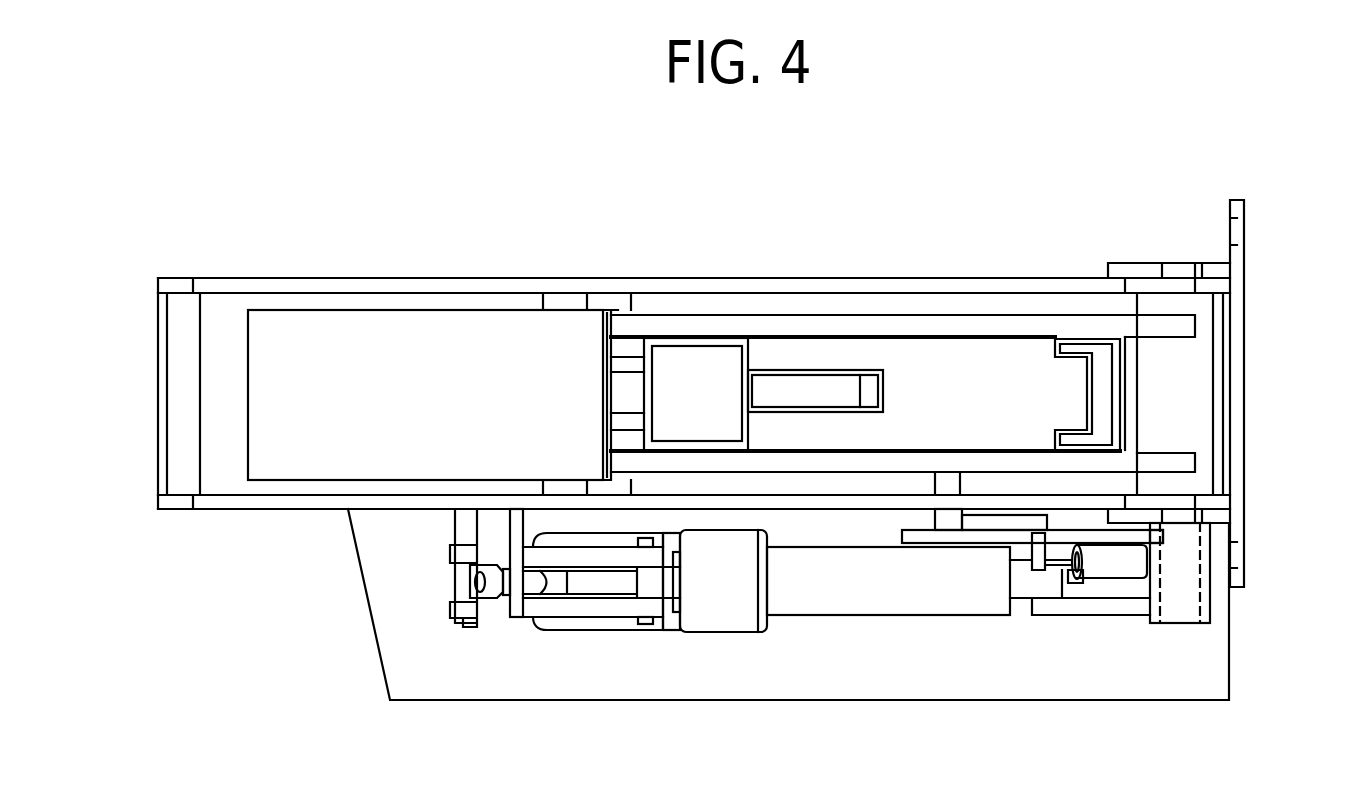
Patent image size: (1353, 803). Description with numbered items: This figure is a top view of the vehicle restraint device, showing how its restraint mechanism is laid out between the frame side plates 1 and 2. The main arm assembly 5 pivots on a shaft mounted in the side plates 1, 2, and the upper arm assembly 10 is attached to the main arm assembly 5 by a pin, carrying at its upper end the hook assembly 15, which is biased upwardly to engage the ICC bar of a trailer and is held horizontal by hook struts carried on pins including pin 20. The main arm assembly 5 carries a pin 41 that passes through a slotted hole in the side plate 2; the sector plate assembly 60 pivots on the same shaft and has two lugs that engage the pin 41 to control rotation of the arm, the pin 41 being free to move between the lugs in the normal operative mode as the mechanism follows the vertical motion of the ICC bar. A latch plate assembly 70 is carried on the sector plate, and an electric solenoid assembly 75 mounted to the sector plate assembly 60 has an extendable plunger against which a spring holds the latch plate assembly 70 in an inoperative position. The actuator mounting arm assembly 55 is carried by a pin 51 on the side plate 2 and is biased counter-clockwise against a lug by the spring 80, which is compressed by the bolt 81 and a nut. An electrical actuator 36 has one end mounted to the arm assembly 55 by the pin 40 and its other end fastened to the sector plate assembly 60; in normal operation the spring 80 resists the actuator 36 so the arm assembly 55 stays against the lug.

The frame side plate 1 is at (255, 283).
The frame side plate 2 is at (255, 502).
The main arm assembly 5 is at (807, 317).
The upper arm assembly 10 is at (417, 312).
The hook assembly 15 is at (1082, 337).
The pin 20 is at (915, 337).
The electrical actuator 36 is at (720, 630).
The pin 40 is at (657, 630).
The pin 41 is at (937, 523).
The pin 51 is at (462, 628).
The actuator mounting arm assembly 55 is at (605, 630).
The sector plate assembly 60 is at (1210, 598).
The latch plate assembly 70 is at (993, 525).
The electric solenoid assembly 75 is at (1107, 578).
The spring 80 is at (563, 630).
The bolt 81 is at (490, 598).